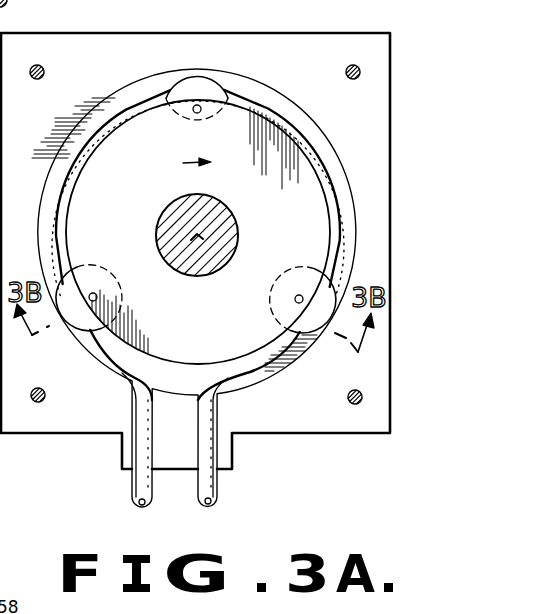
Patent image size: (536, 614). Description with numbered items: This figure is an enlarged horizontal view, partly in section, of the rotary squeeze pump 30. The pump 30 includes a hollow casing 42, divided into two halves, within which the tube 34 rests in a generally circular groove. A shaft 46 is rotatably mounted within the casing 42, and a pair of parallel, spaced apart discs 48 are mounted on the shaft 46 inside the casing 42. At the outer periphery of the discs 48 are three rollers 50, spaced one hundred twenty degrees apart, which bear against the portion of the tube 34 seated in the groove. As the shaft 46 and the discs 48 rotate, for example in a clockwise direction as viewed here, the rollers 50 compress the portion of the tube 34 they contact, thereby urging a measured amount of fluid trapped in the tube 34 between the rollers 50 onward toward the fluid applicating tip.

The pump 30 is at (105, 22).
The hollow casing 42 is at (331, 38).
The tube 34 is at (243, 385).
The discs 48 is at (264, 128).
The shaft 46 is at (224, 205).
The rollers 50 is at (213, 88).